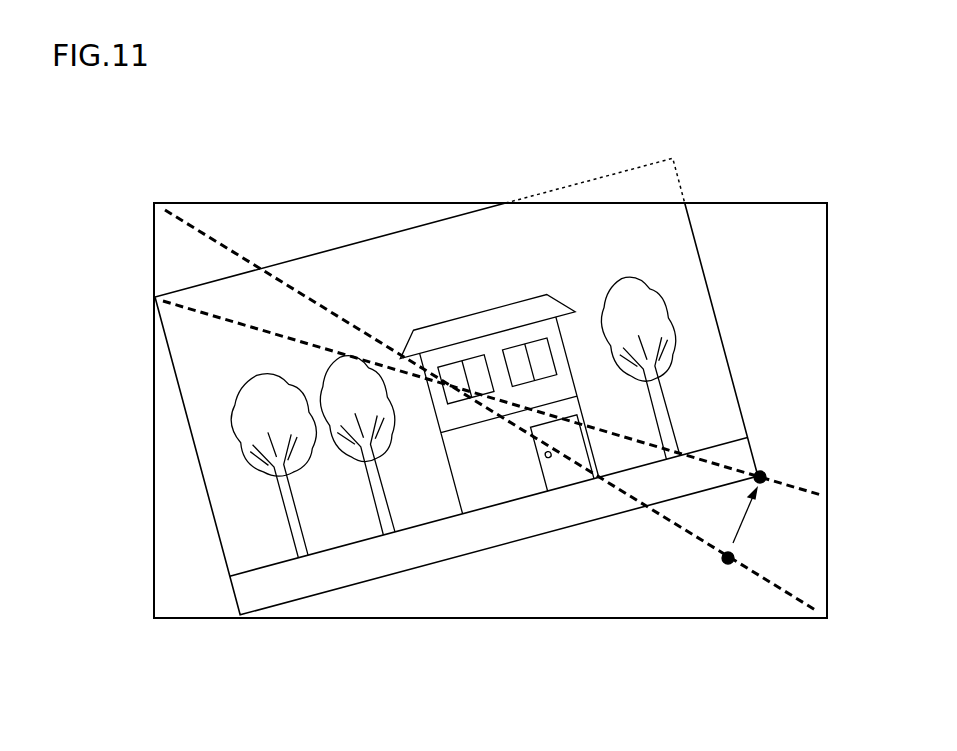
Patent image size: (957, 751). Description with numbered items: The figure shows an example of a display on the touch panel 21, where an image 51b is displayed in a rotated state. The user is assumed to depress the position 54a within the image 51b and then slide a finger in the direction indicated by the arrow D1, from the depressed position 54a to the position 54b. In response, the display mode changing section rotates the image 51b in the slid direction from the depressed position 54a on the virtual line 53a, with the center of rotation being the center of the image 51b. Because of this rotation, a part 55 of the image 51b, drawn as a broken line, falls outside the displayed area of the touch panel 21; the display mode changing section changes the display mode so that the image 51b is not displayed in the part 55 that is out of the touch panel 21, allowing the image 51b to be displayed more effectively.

The touch panel 21 is at (769, 203).
The image 51b is at (428, 226).
The part 55 is at (613, 196).
The virtual line 53a is at (777, 597).
The depressed position 54a is at (727, 563).
The position 54b is at (765, 471).
The arrow D1 is at (752, 515).